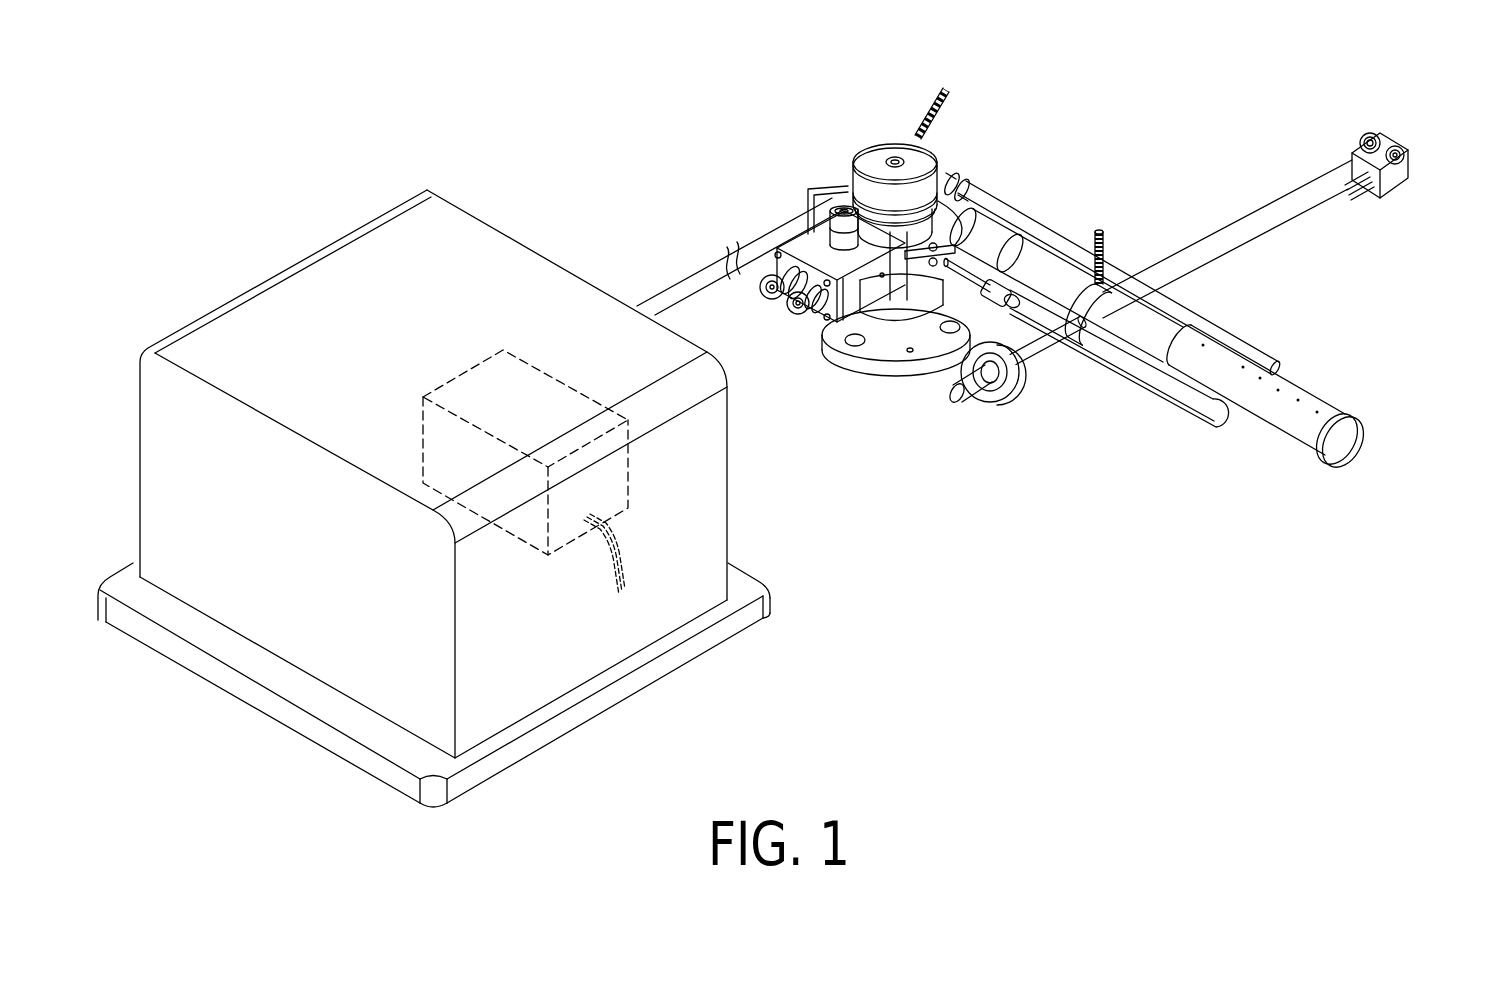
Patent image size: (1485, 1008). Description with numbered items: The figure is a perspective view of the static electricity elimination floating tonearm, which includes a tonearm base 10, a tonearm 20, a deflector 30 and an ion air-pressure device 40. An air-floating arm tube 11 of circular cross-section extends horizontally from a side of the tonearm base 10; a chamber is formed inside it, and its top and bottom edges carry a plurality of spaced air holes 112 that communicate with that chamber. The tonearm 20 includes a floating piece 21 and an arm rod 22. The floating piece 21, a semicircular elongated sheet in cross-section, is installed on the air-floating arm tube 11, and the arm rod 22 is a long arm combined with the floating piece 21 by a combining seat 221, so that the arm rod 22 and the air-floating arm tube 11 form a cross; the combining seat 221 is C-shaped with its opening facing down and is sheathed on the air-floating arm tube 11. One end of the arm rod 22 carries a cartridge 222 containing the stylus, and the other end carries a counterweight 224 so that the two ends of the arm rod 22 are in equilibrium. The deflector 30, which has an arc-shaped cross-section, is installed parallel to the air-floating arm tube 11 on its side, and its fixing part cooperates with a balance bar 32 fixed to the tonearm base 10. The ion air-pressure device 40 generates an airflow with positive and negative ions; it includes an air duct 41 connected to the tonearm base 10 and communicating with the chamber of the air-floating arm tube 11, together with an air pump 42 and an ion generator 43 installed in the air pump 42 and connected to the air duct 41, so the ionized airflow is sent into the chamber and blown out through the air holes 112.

The tonearm base 10 is at (953, 173).
The air-floating arm tube 11 is at (1275, 410).
The air holes 112 is at (1223, 357).
The tonearm 20 is at (1178, 252).
The floating piece 21 is at (1037, 258).
The arm rod 22 is at (1250, 215).
The combining seat 221 is at (1078, 280).
The cartridge 222 is at (1392, 188).
The counterweight 224 is at (1010, 400).
The deflector 30 is at (1120, 381).
The balance bar 32 is at (972, 274).
The ion air-pressure device 40 is at (300, 250).
The air duct 41 is at (750, 243).
The air pump 42 is at (442, 282).
The ion generator 43 is at (543, 400).